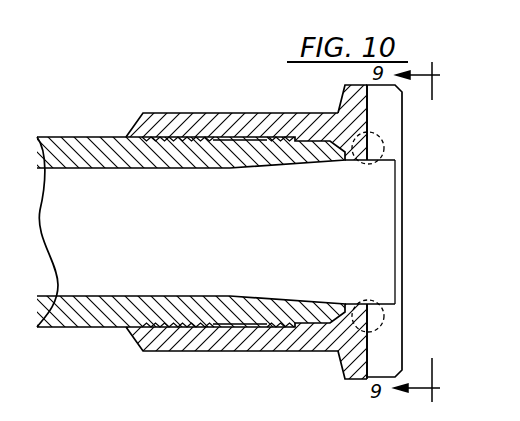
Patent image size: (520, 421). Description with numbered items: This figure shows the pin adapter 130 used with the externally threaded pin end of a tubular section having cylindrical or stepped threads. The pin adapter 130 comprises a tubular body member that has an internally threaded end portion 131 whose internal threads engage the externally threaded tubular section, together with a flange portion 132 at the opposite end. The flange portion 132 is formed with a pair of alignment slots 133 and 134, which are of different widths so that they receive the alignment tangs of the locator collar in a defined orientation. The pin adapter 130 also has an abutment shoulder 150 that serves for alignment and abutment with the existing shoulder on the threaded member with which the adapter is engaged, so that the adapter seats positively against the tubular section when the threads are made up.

The abutment shoulder 150 is at (125, 137).
The internally threaded end portion 131 is at (152, 140).
The pin adapter 130 is at (210, 123).
The flange portion 132 is at (340, 94).
The alignment slot 133 is at (390, 120).
The alignment slot 134 is at (390, 345).